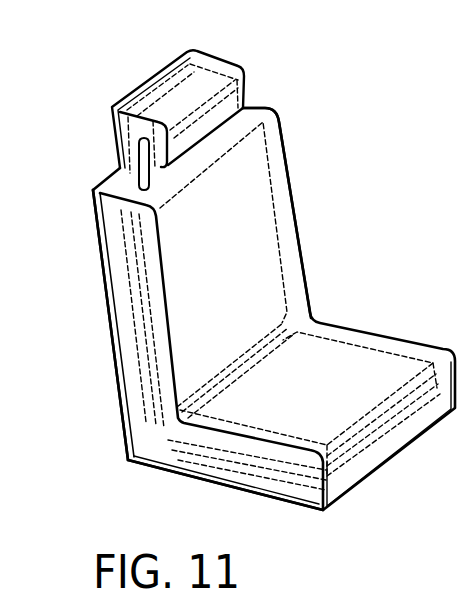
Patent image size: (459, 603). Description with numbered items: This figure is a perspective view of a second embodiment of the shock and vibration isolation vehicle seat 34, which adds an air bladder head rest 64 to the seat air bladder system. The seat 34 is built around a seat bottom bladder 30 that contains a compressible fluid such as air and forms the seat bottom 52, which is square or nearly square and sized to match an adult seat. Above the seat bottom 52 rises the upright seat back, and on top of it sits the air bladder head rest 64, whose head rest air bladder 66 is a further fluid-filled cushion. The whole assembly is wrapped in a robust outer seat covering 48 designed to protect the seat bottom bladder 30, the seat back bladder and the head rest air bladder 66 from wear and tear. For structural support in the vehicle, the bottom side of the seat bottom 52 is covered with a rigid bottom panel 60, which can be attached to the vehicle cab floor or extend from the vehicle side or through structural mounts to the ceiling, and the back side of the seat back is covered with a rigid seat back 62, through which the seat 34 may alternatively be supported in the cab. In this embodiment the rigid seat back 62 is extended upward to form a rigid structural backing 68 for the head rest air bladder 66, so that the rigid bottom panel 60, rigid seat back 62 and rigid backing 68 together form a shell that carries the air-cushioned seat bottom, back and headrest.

The seat bottom bladder 30 is at (346, 348).
The vehicle seat 34 is at (320, 377).
The outer covering 48 is at (278, 119).
The seat bottom 52 is at (395, 367).
The rigid bottom panel 60 is at (218, 490).
The rigid seat back 62 is at (115, 378).
The air bladder head rest 64 is at (113, 152).
The head rest air bladder 66 is at (241, 98).
The rigid structural backing 68 is at (121, 104).